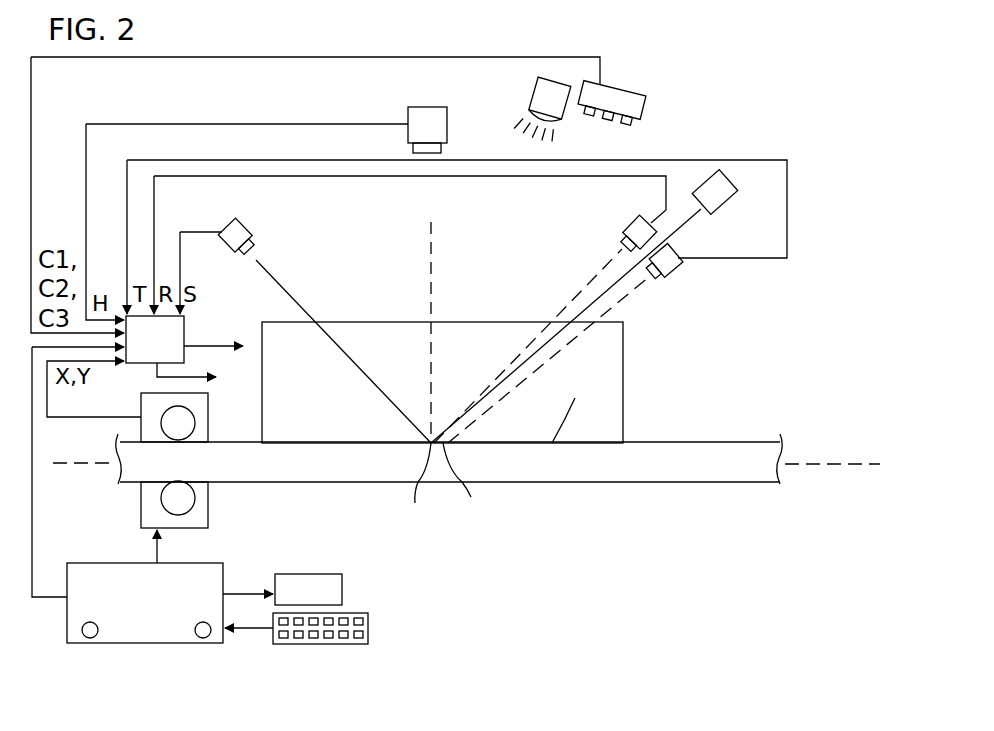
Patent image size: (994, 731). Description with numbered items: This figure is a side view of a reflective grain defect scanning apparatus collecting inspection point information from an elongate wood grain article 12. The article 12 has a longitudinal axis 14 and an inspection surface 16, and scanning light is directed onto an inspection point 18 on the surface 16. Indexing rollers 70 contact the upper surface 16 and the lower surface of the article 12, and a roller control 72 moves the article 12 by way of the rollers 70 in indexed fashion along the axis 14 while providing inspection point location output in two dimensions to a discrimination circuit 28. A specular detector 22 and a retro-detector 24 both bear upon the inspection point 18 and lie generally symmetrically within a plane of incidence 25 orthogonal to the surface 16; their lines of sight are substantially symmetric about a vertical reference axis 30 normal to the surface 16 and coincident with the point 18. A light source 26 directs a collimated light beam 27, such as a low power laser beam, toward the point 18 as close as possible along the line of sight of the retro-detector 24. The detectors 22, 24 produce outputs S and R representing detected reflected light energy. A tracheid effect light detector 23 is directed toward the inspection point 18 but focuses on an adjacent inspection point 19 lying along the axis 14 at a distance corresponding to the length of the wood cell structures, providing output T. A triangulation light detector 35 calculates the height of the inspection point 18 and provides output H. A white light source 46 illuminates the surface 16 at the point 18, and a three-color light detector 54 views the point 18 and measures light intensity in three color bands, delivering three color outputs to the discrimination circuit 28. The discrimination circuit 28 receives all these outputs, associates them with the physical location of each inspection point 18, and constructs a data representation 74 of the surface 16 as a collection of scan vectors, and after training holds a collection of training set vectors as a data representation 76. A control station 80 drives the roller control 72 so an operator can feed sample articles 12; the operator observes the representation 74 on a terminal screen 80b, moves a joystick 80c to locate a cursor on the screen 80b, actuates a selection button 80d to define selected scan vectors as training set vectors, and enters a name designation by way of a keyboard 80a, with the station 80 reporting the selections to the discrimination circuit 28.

The elongate wood grain article 12 is at (350, 474).
The longitudinal axis 14 is at (90, 464).
The inspection surface 16 is at (574, 405).
The inspection point 18 is at (419, 488).
The adjacent inspection point 19 is at (467, 483).
The specular detector 22 is at (258, 224).
The tracheid effect light detector 23 is at (672, 278).
The retro-detector 24 is at (624, 222).
The plane of incidence 25 is at (618, 360).
The light source 26 is at (730, 206).
The collimated light beam 27 is at (592, 286).
The discrimination circuit 28 is at (155, 339).
The vertical reference axis 30 is at (433, 262).
The triangulation light detector 35 is at (445, 112).
The white light source 46 is at (545, 102).
The three-color light detector 54 is at (648, 110).
The indexing rollers 70 is at (192, 426).
The roller control 72 is at (193, 529).
The data representation 74 is at (157, 380).
The training set data representation 76 is at (216, 348).
The control station 80 is at (137, 643).
The keyboard 80a is at (368, 630).
The terminal screen 80b is at (342, 588).
The joystick 80c is at (84, 638).
The selection button 80d is at (207, 638).